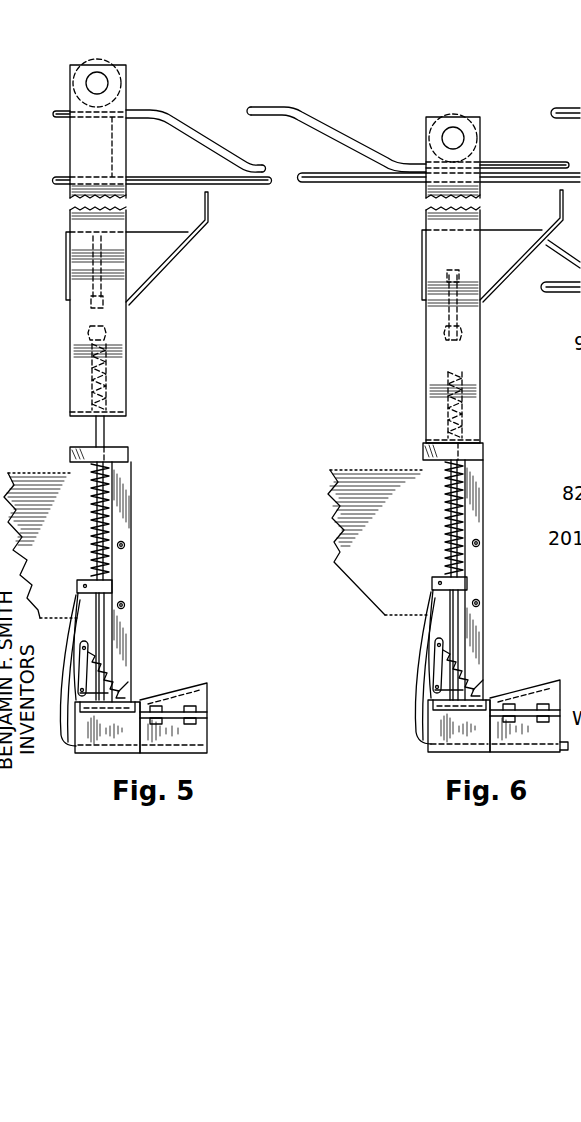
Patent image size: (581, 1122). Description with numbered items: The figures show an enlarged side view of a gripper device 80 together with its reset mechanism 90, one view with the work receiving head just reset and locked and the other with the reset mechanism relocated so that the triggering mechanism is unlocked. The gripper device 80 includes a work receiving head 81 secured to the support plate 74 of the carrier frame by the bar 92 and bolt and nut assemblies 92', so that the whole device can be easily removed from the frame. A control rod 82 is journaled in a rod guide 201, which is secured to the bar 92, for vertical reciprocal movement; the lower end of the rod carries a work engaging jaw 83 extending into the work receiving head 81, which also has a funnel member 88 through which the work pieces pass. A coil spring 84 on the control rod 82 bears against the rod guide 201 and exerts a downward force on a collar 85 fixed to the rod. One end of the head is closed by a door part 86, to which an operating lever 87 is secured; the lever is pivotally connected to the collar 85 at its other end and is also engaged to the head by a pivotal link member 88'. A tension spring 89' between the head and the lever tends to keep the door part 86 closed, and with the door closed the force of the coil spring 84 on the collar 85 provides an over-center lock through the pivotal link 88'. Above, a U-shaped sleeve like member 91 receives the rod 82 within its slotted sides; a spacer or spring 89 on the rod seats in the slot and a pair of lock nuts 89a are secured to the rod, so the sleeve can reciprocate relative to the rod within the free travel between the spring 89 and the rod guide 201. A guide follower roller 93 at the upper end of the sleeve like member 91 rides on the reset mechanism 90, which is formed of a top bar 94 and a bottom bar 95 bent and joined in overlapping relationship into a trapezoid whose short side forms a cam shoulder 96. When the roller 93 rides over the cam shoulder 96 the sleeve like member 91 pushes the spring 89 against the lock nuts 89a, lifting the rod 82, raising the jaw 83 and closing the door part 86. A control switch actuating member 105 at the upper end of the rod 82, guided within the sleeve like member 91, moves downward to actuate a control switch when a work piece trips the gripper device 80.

In FIG. 5, the support plate 74 is at (42, 478).
In FIG. 6, the support plate 74 is at (378, 542).
In FIG. 5, the gripper device 80 is at (150, 530).
In FIG. 6, the gripper device 80 is at (488, 538).
In FIG. 5, the work receiving head 81 is at (114, 735).
In FIG. 6, the work receiving head 81 is at (462, 732).
In FIG. 5, the control rod 82 is at (106, 635).
In FIG. 6, the control rod 82 is at (460, 640).
In FIG. 5, the work engaging jaw 83 is at (80, 690).
In FIG. 6, the work engaging jaw 83 is at (440, 712).
In FIG. 5, the coil spring 84 is at (102, 476).
In FIG. 6, the coil spring 84 is at (460, 482).
In FIG. 5, the collar 85 is at (90, 580).
In FIG. 6, the collar 85 is at (436, 578).
In FIG. 5, the door part 86 is at (78, 742).
In FIG. 6, the door part 86 is at (420, 742).
In FIG. 5, the operating lever 87 is at (74, 650).
In FIG. 6, the operating lever 87 is at (425, 660).
In FIG. 5, the funnel member 88 is at (181, 733).
In FIG. 6, the funnel member 88 is at (535, 732).
In FIG. 5, the pivotal link member 88' is at (131, 679).
In FIG. 6, the pivotal link member 88' is at (416, 685).
In FIG. 5, the spacer or spring 89 is at (134, 377).
In FIG. 6, the spacer or spring 89 is at (487, 400).
In FIG. 5, the lock nuts 89a is at (92, 332).
In FIG. 6, the lock nuts 89a is at (440, 326).
In FIG. 5, the tension spring 89' is at (135, 670).
In FIG. 6, the tension spring 89' is at (489, 671).
In FIG. 5, the reset mechanism 90 is at (244, 184).
In FIG. 5, the U-shaped sleeve like member 91 is at (118, 322).
In FIG. 6, the U-shaped sleeve like member 91 is at (475, 338).
In FIG. 5, the bar 92 is at (144, 582).
In FIG. 6, the bar 92 is at (497, 580).
In FIG. 5, the bolt and nut assemblies 92' is at (155, 574).
In FIG. 6, the bolt and nut assemblies 92' is at (504, 573).
In FIG. 5, the guide follower roller 93 is at (122, 84).
In FIG. 6, the guide follower roller 93 is at (470, 137).
In FIG. 5, the top bar 94 is at (62, 118).
In FIG. 6, the top bar 94 is at (515, 164).
In FIG. 5, the bottom bar 95 is at (64, 186).
In FIG. 6, the bottom bar 95 is at (497, 184).
In FIG. 5, the cam shoulder 96 is at (180, 130).
In FIG. 6, the cam shoulder 96 is at (345, 130).
In FIG. 5, the control switch actuating member 105 is at (165, 262).
In FIG. 6, the control switch actuating member 105 is at (508, 286).
In FIG. 5, the rod guide 201 is at (77, 446).
In FIG. 6, the rod guide 201 is at (424, 450).